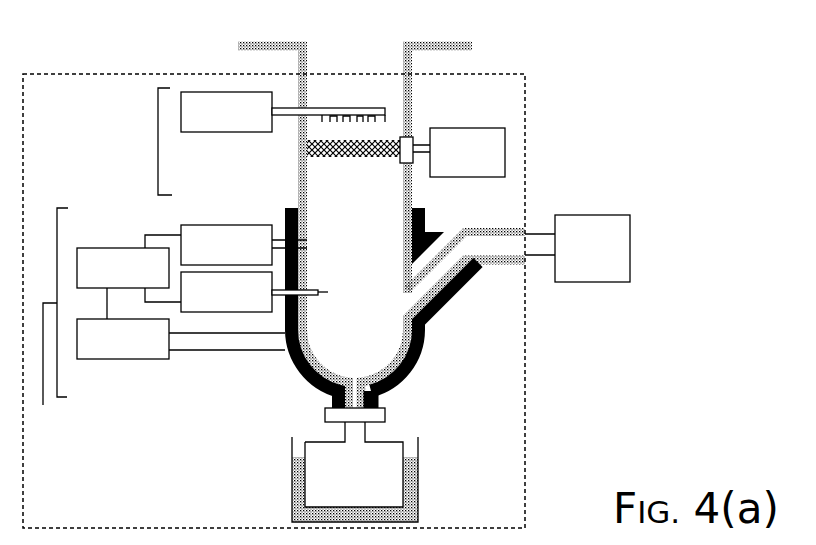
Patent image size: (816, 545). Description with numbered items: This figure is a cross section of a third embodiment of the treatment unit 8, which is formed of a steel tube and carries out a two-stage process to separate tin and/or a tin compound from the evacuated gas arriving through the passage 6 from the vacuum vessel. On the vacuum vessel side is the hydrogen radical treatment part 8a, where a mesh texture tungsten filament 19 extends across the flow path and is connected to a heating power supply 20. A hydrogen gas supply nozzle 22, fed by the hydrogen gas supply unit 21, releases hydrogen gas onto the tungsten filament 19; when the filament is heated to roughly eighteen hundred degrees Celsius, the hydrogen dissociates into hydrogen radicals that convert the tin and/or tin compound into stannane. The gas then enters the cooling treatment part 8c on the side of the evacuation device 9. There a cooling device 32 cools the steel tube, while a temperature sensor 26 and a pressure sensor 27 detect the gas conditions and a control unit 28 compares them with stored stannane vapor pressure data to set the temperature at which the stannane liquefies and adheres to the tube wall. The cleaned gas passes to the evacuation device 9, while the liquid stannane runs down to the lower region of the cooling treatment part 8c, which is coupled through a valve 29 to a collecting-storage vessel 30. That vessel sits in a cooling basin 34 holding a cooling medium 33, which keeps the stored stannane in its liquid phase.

The gas supply pipe 6 is at (383, 41).
The treatment unit 8 is at (525, 100).
The hydrogen radical treatment part 8a is at (158, 140).
The cooling treatment part 8c is at (50, 317).
The evacuation device 9 is at (577, 248).
The tungsten filament 19 is at (318, 162).
The heating power supply 20 is at (452, 152).
The hydrogen gas supply unit 21 is at (226, 112).
The hydrogen gas supply nozzle 22 is at (372, 103).
The temperature sensor 26 is at (254, 292).
The pressure sensor 27 is at (244, 245).
The control unit 28 is at (129, 277).
The valve 29 is at (385, 414).
The collecting-storage vessel 30 is at (394, 466).
The cooling device 32 is at (181, 339).
The cooling medium 33 is at (410, 485).
The cooling basin 34 is at (420, 505).